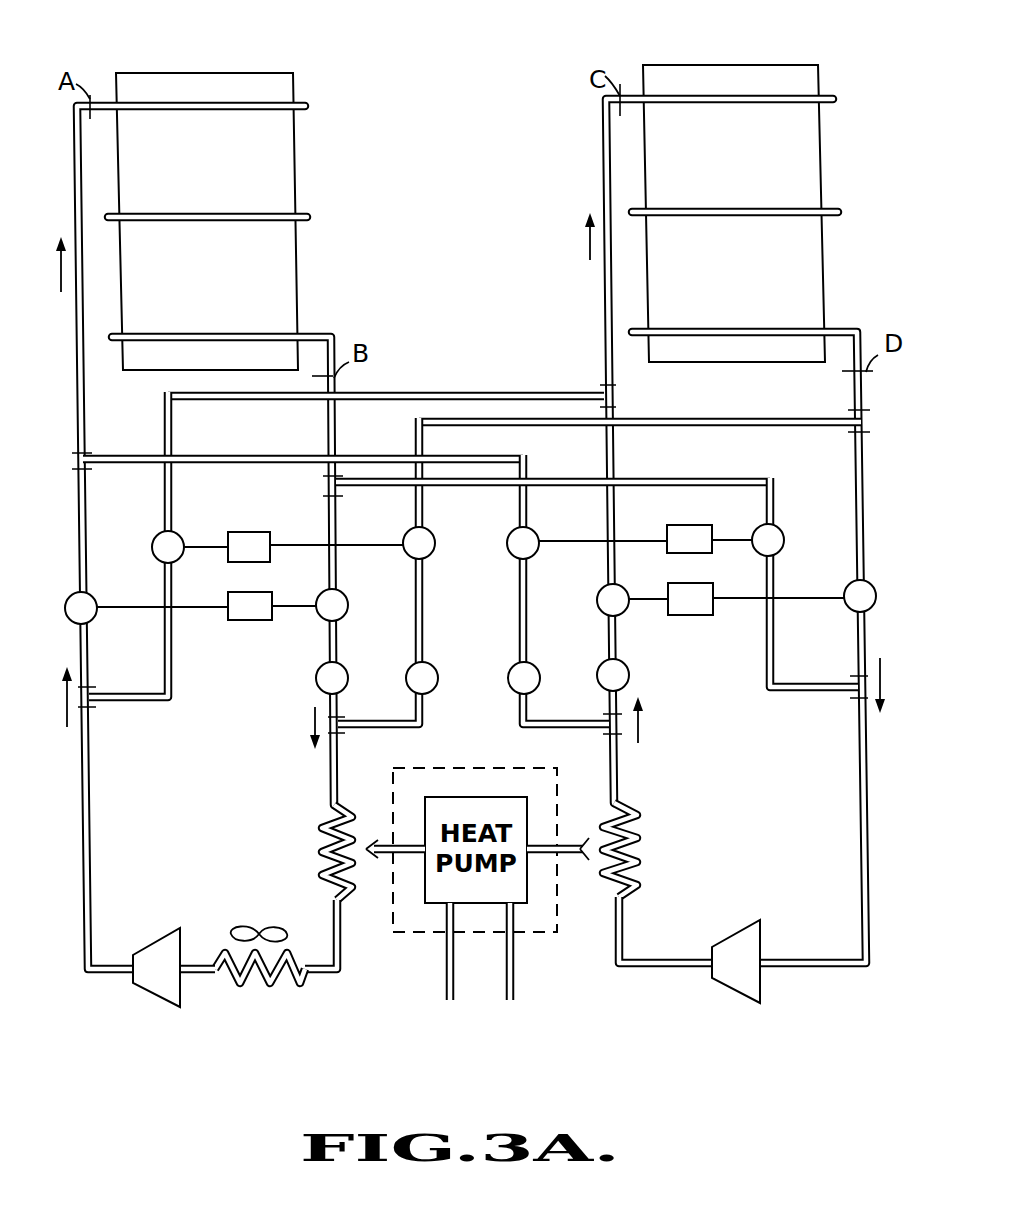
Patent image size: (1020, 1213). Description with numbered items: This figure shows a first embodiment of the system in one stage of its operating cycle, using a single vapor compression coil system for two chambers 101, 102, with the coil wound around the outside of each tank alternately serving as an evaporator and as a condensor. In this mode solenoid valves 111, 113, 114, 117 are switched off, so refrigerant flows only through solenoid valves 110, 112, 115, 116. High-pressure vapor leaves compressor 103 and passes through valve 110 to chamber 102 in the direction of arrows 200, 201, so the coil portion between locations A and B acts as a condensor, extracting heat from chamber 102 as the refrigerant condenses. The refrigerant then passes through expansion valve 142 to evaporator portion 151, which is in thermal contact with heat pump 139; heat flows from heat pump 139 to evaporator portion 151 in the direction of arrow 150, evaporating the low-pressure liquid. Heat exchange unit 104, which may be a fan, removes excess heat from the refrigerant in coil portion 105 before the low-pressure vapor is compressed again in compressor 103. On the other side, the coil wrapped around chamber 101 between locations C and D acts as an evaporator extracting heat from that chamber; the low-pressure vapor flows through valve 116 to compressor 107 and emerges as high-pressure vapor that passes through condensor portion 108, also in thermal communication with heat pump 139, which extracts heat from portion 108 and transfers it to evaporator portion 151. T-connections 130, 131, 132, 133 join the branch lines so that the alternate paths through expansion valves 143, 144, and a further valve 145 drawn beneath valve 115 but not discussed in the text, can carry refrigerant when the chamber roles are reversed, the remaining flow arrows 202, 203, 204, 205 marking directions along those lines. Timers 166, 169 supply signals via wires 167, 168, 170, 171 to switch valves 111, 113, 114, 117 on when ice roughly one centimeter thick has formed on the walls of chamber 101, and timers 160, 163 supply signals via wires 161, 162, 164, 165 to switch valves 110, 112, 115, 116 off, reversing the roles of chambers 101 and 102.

The chamber 101 is at (754, 200).
The chamber 102 is at (228, 201).
The compressor 103 is at (154, 1003).
The heat exchange unit 104 is at (275, 919).
The coil portion 105 is at (258, 985).
The compressor 107 is at (748, 1007).
The condensor portion 108 is at (638, 815).
The solenoid valve 110 is at (70, 598).
The solenoid valve 111 is at (158, 535).
The solenoid valve 112 is at (343, 596).
The solenoid valve 113 is at (426, 560).
The solenoid valve 114 is at (509, 533).
The solenoid valve 115 is at (600, 591).
The solenoid valve 116 is at (872, 585).
The solenoid valve 117 is at (782, 531).
The T-connector 130 is at (86, 455).
The T-connector 131 is at (338, 492).
The T-connection 132 is at (601, 392).
The T-connection 133 is at (850, 426).
The heat pump 139 is at (531, 932).
The expansion valve 142 is at (346, 670).
The expansion valve 143 is at (434, 691).
The expansion valve 144 is at (510, 670).
The valve 145 is at (600, 668).
The arrow 150 is at (400, 855).
The evaporator portion 151 is at (327, 858).
The timer 160 is at (698, 616).
The wire 161 is at (750, 600).
The wire 162 is at (652, 602).
The timer 163 is at (248, 622).
The wire 164 is at (289, 604).
The wire 165 is at (146, 604).
The timer 166 is at (250, 530).
The wire 167 is at (300, 543).
The wire 168 is at (207, 544).
The timer 169 is at (686, 527).
The wire 170 is at (729, 538).
The wire 171 is at (578, 540).
The arrow 200 is at (65, 712).
The arrow 201 is at (59, 280).
The flow direction 202 is at (313, 725).
The flow direction 203 is at (642, 722).
The flow direction 204 is at (589, 254).
The flow direction 205 is at (883, 684).